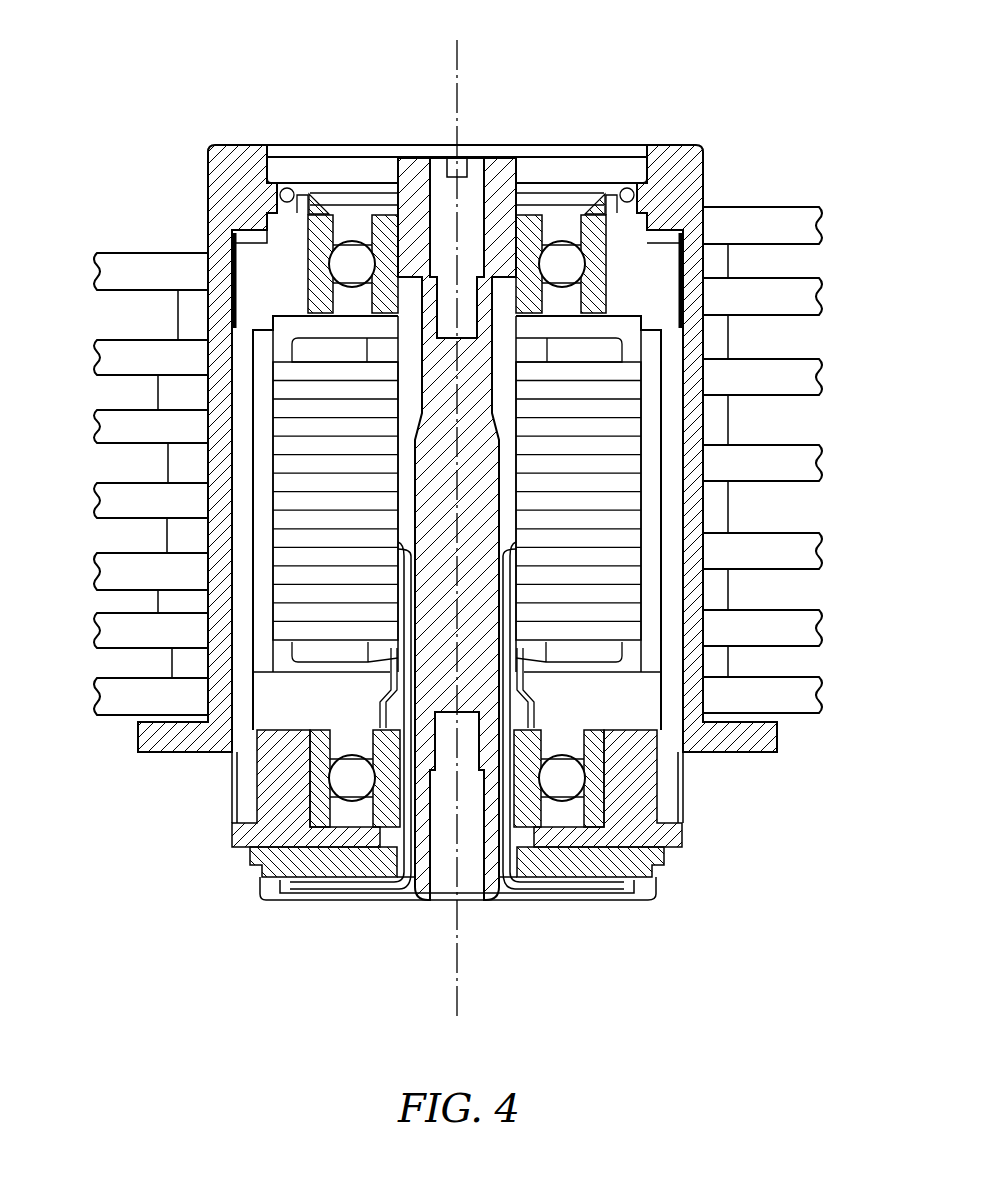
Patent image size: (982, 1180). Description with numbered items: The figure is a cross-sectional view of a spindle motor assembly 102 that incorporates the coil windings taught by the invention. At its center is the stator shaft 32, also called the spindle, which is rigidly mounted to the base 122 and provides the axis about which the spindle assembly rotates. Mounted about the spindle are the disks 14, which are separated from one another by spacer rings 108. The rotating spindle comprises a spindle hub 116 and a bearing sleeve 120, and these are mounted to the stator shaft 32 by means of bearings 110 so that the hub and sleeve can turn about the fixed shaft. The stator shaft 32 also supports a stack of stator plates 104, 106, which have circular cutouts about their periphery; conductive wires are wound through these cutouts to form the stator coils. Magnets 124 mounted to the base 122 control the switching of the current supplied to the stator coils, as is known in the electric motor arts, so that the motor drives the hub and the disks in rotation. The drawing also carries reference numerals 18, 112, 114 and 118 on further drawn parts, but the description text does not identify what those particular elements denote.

The spindle motor assembly 102 is at (178, 93).
The disks 14 is at (92, 698).
The fin connecting web 18 is at (192, 668).
The stator shaft 32 is at (481, 147).
The stator plates 104 is at (613, 499).
The stator plates 106 is at (287, 500).
The spacer rings 108 is at (720, 668).
The bearings 110 is at (340, 778).
The upper bearing 112 is at (347, 260).
The end plate 114 is at (567, 157).
The spindle hub 116 is at (706, 172).
The shaft 118 is at (438, 673).
The bearing sleeve 120 is at (670, 288).
The base 122 is at (593, 900).
The magnets 124 is at (250, 853).